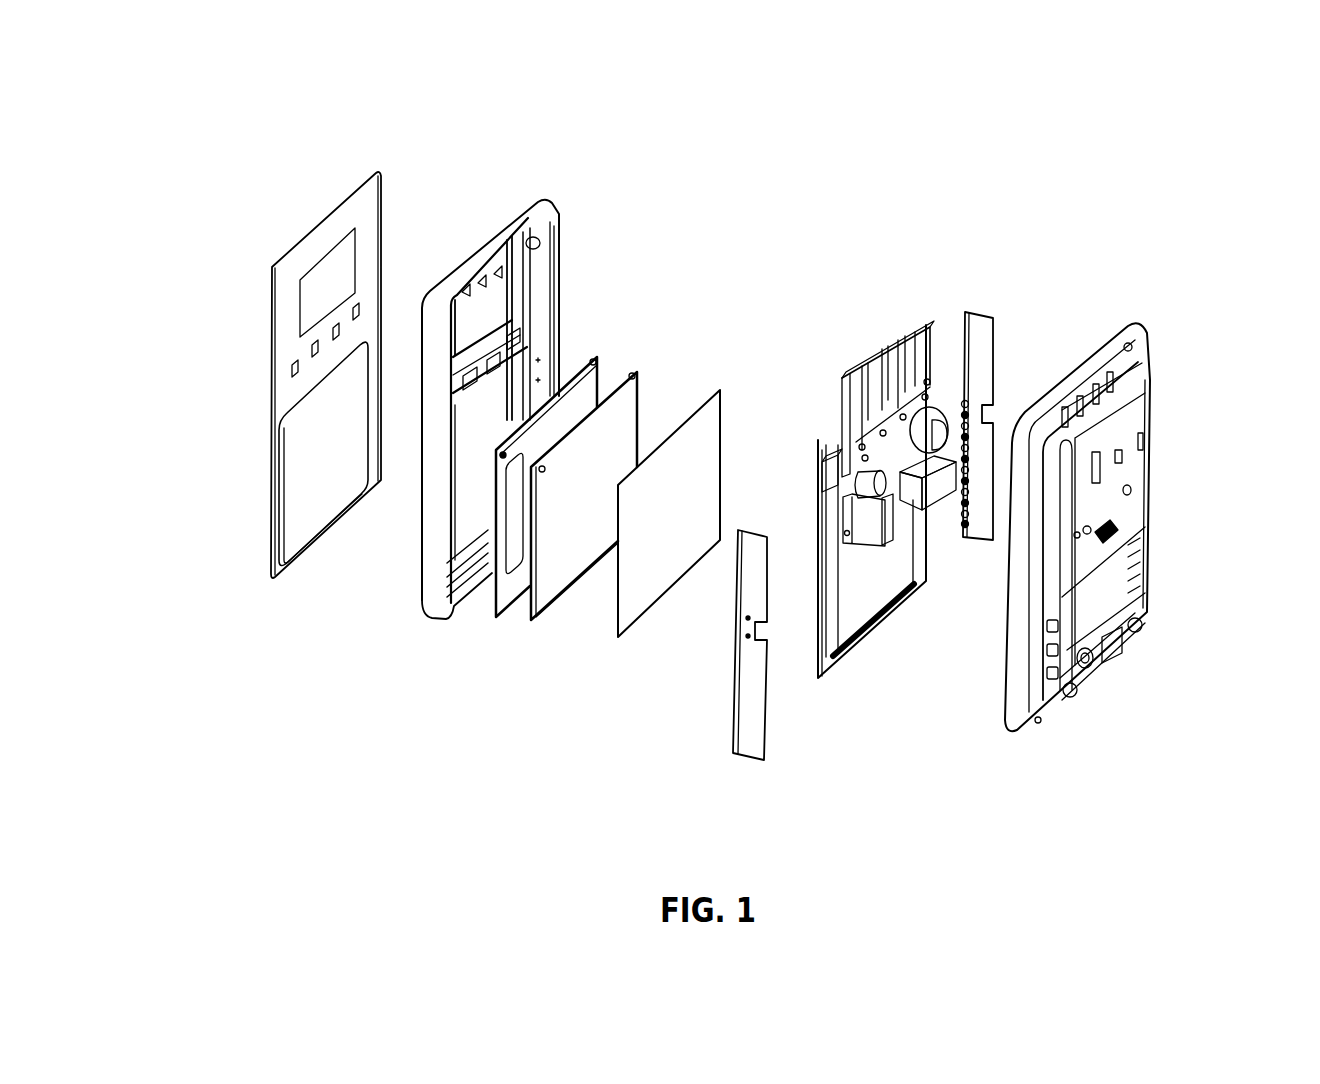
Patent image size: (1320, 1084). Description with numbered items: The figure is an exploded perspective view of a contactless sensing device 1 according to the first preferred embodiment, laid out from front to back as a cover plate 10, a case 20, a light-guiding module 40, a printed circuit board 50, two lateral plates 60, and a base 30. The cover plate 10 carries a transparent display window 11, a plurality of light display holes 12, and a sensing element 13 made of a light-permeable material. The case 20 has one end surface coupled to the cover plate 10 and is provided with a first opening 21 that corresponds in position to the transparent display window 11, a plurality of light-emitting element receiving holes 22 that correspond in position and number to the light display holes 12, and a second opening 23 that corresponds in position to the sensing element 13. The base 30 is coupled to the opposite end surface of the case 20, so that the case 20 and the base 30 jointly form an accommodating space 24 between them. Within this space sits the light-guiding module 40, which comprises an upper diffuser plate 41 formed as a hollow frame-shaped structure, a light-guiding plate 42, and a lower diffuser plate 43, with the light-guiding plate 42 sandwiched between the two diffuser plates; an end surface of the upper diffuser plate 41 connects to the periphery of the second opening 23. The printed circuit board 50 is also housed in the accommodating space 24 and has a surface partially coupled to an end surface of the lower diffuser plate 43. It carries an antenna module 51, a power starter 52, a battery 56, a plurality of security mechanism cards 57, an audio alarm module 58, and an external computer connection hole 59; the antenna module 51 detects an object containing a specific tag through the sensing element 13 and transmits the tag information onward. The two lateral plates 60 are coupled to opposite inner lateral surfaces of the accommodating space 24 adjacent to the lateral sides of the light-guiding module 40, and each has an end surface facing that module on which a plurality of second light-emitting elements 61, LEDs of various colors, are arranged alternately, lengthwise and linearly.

The contactless sensing device 1 is at (1188, 141).
The cover plate 10 is at (355, 184).
The transparent display window 11 is at (327, 287).
The light display holes 12 is at (292, 372).
The sensing element 13 is at (308, 462).
The case 20 is at (467, 270).
The first opening 21 is at (493, 310).
The light-emitting element receiving holes 22 is at (523, 343).
The second opening 23 is at (463, 470).
The accommodating space 24 is at (467, 522).
The light-guiding module 40 is at (610, 773).
The upper diffuser plate 41 is at (517, 580).
The light-guiding plate 42 is at (580, 580).
The lower diffuser plate 43 is at (667, 597).
The printed circuit board 50 is at (847, 612).
The antenna module 51 is at (820, 680).
The power starter 52 is at (880, 540).
The battery 56 is at (938, 417).
The security mechanism cards 57 is at (905, 360).
The audio alarm module 58 is at (837, 432).
The external computer connection hole 59 is at (941, 500).
The lateral plates 60 is at (748, 763).
The second light-emitting elements 61 is at (970, 540).
The base 30 is at (1022, 742).